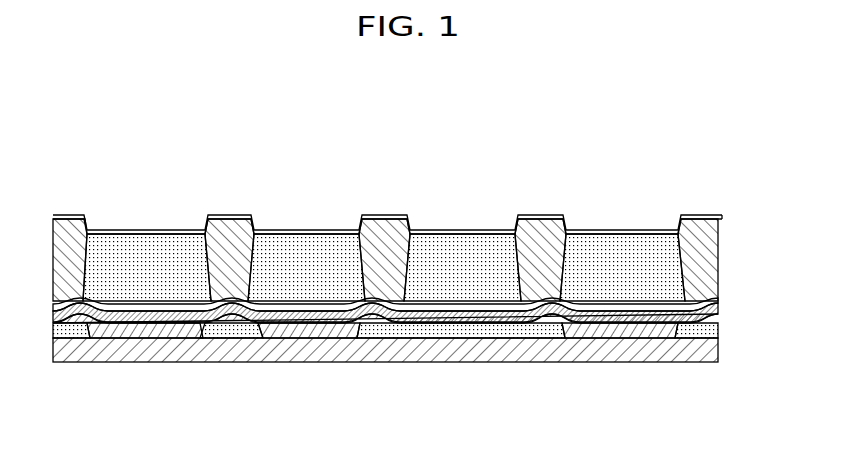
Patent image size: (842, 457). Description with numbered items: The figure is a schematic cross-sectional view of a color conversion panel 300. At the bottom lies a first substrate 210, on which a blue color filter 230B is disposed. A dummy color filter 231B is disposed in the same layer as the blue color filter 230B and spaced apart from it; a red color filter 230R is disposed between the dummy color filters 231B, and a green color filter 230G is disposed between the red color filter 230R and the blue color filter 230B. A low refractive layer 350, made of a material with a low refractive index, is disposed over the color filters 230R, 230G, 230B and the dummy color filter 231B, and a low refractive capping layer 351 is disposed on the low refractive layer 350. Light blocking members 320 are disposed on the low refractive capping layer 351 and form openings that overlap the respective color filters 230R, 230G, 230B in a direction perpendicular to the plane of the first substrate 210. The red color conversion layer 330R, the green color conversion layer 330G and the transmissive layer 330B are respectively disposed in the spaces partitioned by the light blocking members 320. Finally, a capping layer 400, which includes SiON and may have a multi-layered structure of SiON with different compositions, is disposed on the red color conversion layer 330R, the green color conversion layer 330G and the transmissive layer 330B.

The color conversion panel 300 is at (590, 157).
The first substrate 210 is at (641, 350).
The red color filter 230R is at (141, 330).
The green color filter 230G is at (315, 330).
The blue color filter 230B is at (460, 333).
The dummy color filter 231B is at (77, 330).
The light blocking member 320 is at (73, 231).
The red color conversion layer 330R is at (147, 250).
The green color conversion layer 330G is at (312, 250).
The transmissive layer 330B is at (458, 252).
The low refractive layer 350 is at (712, 318).
The low refractive capping layer 351 is at (700, 307).
The capping layer 400 is at (708, 216).